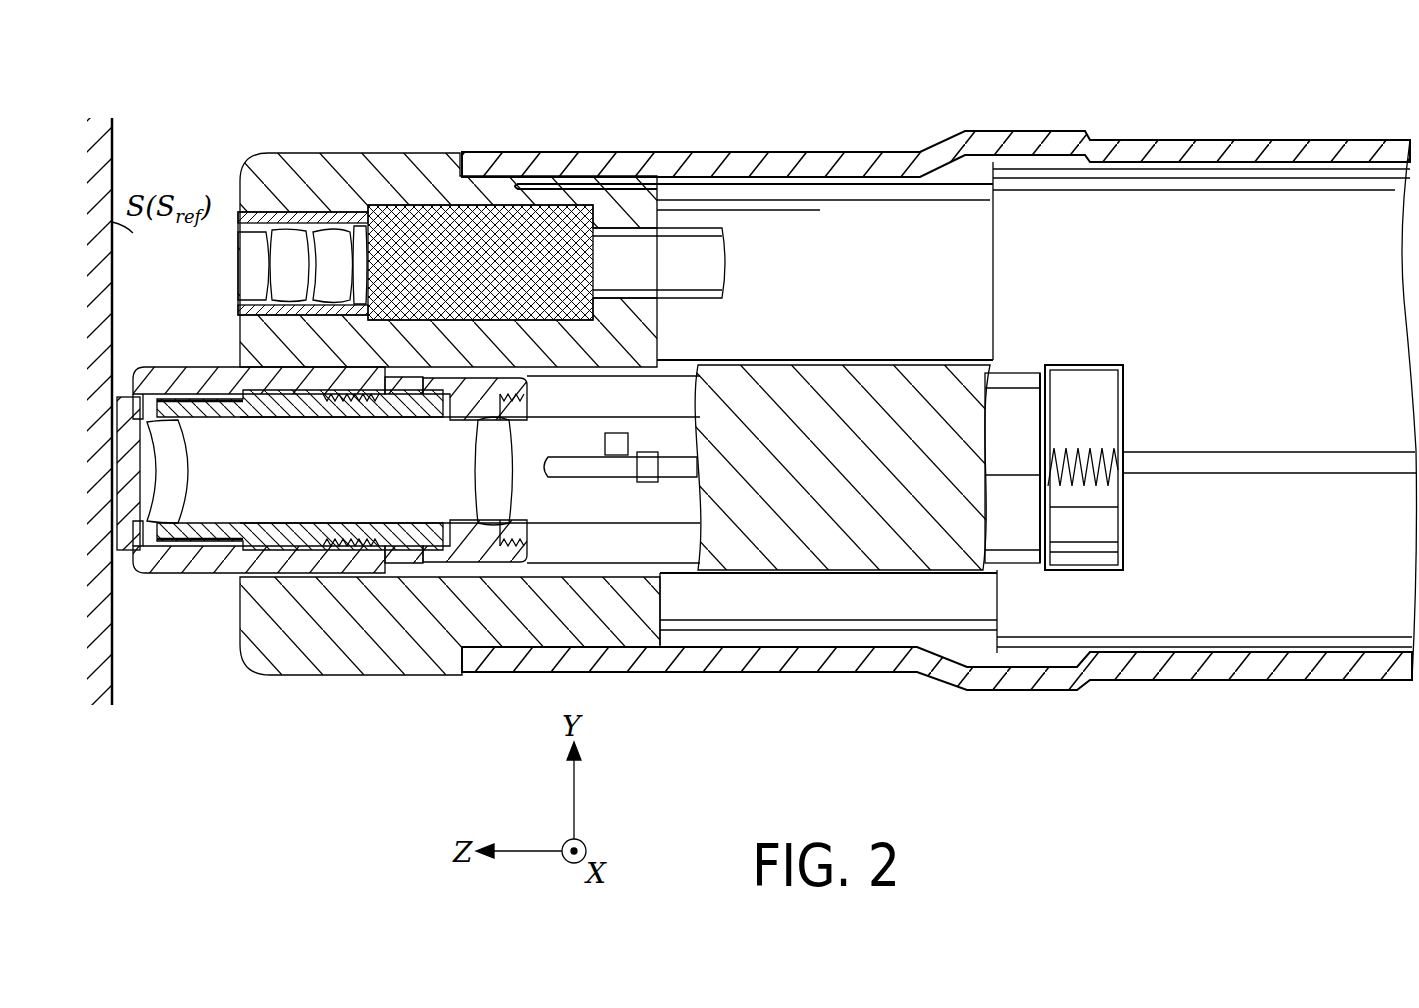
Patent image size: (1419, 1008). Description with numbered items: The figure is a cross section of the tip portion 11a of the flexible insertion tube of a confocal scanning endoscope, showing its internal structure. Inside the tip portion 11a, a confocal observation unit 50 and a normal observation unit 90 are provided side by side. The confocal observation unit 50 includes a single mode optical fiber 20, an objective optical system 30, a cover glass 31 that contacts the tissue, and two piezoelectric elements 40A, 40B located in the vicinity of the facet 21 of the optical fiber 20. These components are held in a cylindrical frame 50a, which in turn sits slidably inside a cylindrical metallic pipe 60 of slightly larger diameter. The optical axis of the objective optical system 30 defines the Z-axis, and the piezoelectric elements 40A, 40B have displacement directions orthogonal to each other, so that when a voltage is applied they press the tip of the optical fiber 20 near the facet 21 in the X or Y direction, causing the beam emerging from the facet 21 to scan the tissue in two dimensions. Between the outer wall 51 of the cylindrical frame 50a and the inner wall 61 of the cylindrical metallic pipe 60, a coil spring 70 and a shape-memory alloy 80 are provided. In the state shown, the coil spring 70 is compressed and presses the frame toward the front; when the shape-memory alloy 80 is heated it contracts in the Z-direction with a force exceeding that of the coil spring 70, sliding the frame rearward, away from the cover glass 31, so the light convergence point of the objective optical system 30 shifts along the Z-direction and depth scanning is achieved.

The tip portion 11a is at (1093, 106).
The single mode optical fiber 20 is at (1285, 457).
The facet 21 is at (538, 468).
The objective optical system 30 is at (440, 576).
The cover glass 31 is at (127, 553).
The piezoelectric element 40A is at (612, 433).
The piezoelectric element 40B is at (643, 484).
The confocal observation unit 50 is at (803, 572).
The cylindrical frame 50a is at (1018, 372).
The outer wall 51 is at (1050, 385).
The cylindrical metallic pipe 60 is at (1100, 372).
The inner wall 61 is at (1112, 420).
The coil spring 70 is at (1090, 481).
The shape-memory alloy 80 is at (1103, 533).
The normal observation unit 90 is at (538, 214).